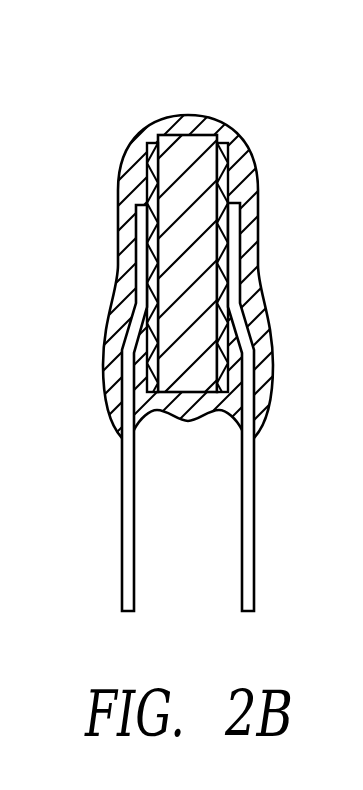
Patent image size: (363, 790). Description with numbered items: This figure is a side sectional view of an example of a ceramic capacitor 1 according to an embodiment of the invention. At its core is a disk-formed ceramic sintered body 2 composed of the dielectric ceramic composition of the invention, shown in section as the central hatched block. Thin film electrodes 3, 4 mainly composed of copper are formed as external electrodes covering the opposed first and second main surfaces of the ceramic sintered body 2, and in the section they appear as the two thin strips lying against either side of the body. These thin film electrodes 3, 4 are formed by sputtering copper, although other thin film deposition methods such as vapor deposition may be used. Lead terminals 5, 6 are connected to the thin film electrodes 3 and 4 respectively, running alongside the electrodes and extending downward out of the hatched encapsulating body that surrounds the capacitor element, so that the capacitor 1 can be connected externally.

The ceramic capacitor 1 is at (121, 106).
The ceramic sintered body 2 is at (191, 152).
The thin film electrode 3 is at (150, 173).
The thin film electrode 4 is at (221, 189).
The lead terminal 5 is at (121, 509).
The lead terminal 6 is at (255, 520).